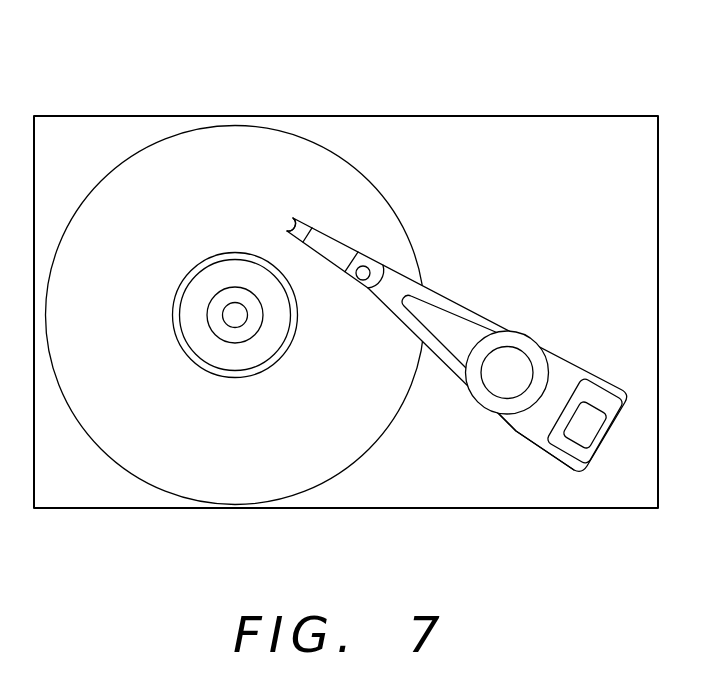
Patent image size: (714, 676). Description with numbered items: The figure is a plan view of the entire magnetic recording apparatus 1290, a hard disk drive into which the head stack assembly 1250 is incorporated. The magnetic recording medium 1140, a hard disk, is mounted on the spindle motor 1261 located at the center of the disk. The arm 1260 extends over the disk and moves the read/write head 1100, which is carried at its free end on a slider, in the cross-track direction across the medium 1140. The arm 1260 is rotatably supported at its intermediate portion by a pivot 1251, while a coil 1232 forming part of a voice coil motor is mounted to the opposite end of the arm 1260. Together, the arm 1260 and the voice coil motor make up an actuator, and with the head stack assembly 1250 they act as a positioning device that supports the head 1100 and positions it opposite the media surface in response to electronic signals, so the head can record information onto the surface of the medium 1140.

The magnetic recording apparatus 1290 is at (384, 104).
The read/write head 1100 is at (300, 216).
The pivot bearing 1251 is at (509, 331).
The magnetic recording medium 1140 is at (168, 492).
The spindle motor 1261 is at (236, 328).
The arm 1260 is at (452, 372).
The head stack assembly 1250 is at (512, 437).
The coil 1232 is at (606, 440).